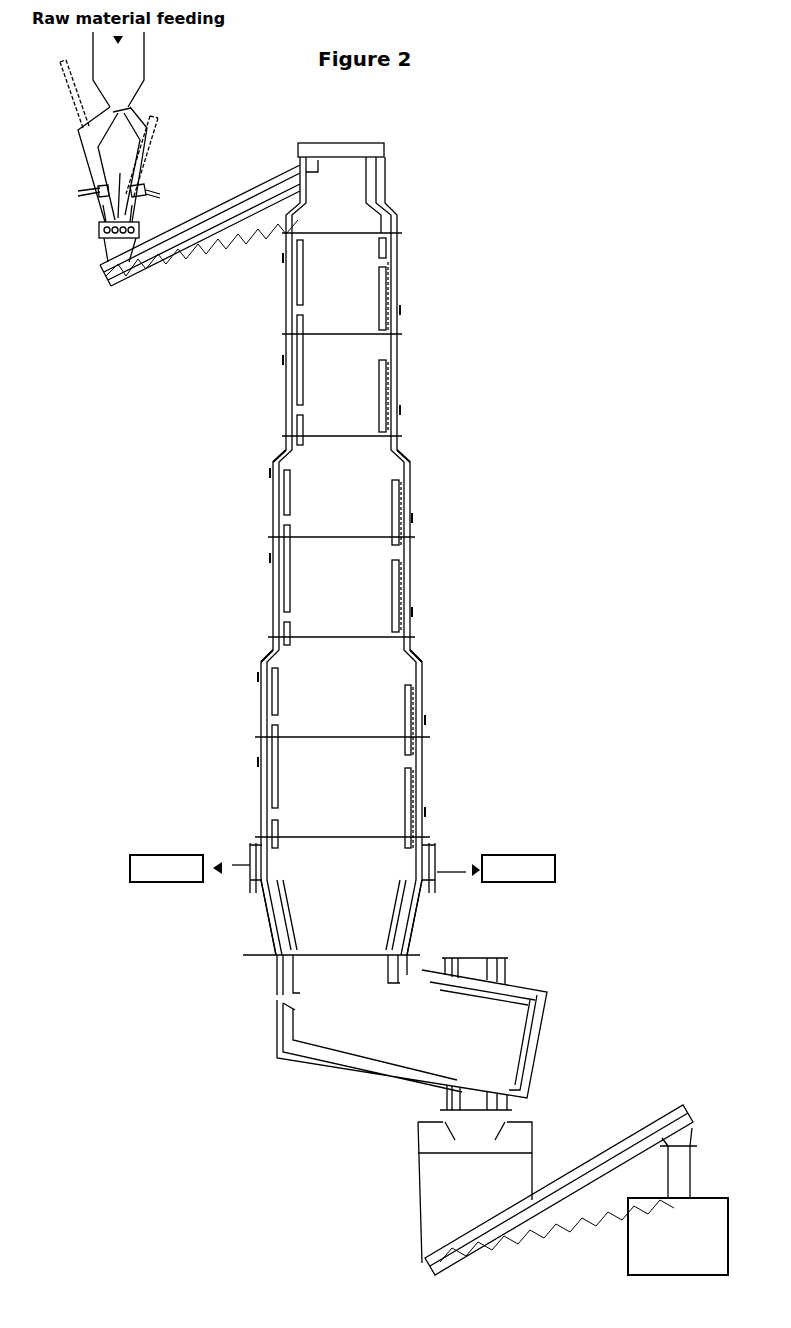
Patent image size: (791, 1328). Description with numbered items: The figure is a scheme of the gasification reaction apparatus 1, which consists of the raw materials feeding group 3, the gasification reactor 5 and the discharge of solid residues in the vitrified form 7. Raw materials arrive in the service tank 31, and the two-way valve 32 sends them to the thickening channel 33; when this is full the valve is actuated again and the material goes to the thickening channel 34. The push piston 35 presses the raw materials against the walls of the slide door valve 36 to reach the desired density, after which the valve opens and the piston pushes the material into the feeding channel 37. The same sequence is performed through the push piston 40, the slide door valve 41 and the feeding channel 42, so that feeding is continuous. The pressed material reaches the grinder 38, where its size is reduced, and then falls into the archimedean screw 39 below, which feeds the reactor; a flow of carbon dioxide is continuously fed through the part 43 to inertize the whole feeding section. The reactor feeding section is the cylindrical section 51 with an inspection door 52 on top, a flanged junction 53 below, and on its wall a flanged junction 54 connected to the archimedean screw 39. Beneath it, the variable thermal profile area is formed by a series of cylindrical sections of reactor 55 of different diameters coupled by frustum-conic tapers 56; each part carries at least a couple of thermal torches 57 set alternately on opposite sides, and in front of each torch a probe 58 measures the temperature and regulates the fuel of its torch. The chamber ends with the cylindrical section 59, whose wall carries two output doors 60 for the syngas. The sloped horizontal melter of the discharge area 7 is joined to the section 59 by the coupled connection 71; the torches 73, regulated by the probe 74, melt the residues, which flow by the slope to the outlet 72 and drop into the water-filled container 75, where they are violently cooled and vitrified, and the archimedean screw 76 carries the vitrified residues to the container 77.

The apparatus 1 is at (385, 167).
The raw materials feeding group 3 is at (146, 82).
The gasification reactor 5 is at (517, 433).
The discharge of solid residues in the vitrified form 7 is at (540, 962).
The service tank 31 is at (93, 42).
The two-way valve 32 is at (131, 108).
The thickening channel 33 is at (92, 165).
The thickening channel 34 is at (143, 165).
The push piston 35 is at (85, 130).
The slide door valve 36 is at (78, 193).
The feeding channel 37 is at (103, 212).
The grinder 38 is at (99, 233).
The archimedean screw 39 is at (100, 268).
The push piston 40 is at (157, 127).
The slide door valve 41 is at (160, 194).
The feeding channel 42 is at (128, 212).
The part for CO2 flow 43 is at (119, 187).
The cylindrical section 51 is at (386, 181).
The inspection door 52 is at (342, 148).
The flanged junction 53 is at (402, 233).
The flanged junction 54 is at (302, 172).
The cylindrical sections of reactor 55 is at (399, 283).
The frustum-conic tapers 56 is at (404, 456).
The thermal torches 57 is at (292, 312).
The probe 58 is at (286, 258).
The cylindrical section 59 is at (266, 908).
The output doors 60 is at (445, 881).
The coupled connection 71 is at (321, 955).
The gasification solid residues outlet 72 is at (475, 1100).
The torches 73 is at (277, 1000).
The probe 74 is at (473, 968).
The container 75 is at (418, 1170).
The archimedean screw 76 is at (588, 1160).
The container 77 is at (628, 1228).